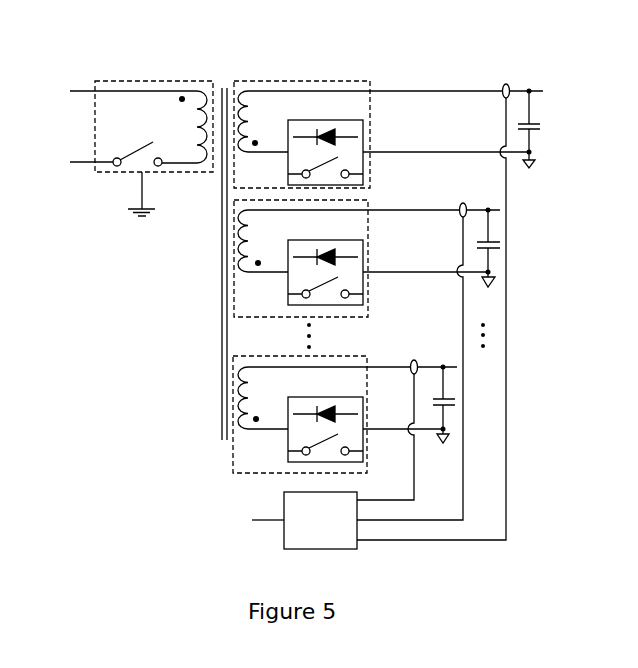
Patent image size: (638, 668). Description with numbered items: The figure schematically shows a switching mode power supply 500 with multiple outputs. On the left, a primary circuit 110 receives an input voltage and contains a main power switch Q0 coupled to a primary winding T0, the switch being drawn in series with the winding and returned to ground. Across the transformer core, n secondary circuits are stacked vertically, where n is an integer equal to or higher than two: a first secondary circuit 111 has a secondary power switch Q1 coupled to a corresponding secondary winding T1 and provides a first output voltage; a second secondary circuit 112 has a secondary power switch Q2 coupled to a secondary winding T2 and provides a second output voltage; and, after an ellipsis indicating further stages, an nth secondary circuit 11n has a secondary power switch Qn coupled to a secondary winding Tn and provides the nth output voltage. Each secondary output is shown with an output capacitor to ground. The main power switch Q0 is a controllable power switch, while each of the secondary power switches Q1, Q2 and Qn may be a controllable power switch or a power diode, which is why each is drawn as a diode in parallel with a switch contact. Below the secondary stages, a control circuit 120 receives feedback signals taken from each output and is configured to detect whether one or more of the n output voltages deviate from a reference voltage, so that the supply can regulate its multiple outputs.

The switching mode power supply 500 is at (103, 55).
The primary circuit 110 is at (163, 80).
The first secondary circuit 111 is at (370, 107).
The second secondary circuit 112 is at (369, 232).
The nth secondary circuit 11n is at (368, 387).
The control circuit 120 is at (304, 520).
The primary winding T0 is at (138, 127).
The main power switch Q0 is at (116, 149).
The first secondary winding T1 is at (390, 121).
The first secondary power switch Q1 is at (325, 143).
The second secondary winding T2 is at (369, 241).
The second secondary power switch Q2 is at (325, 263).
The nth secondary winding Tn is at (347, 398).
The nth secondary power switch Qn is at (325, 419).